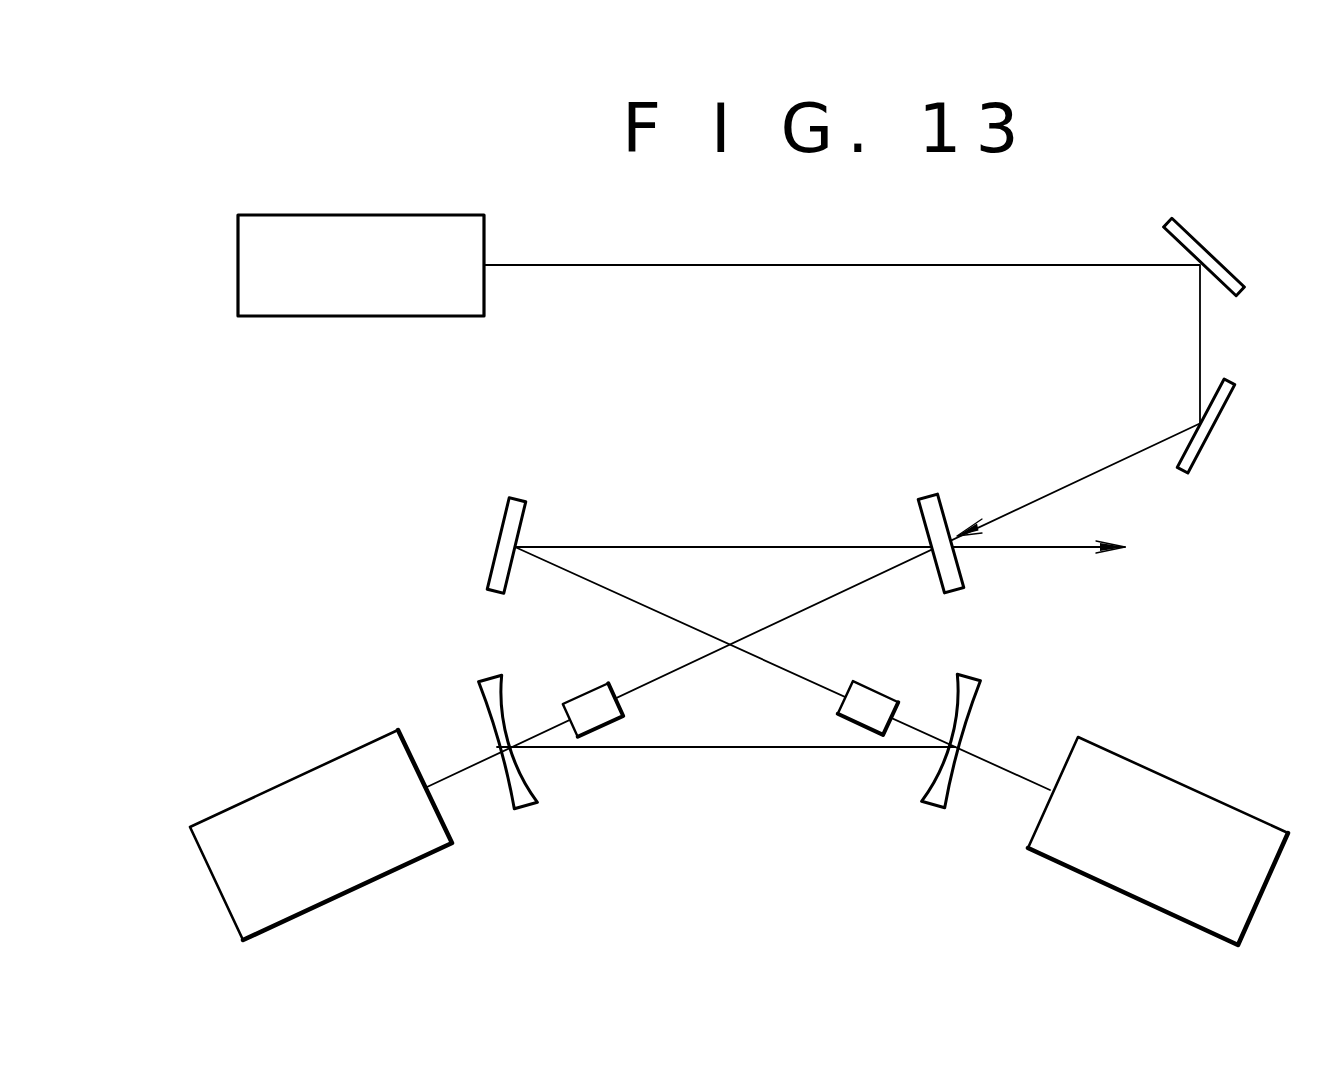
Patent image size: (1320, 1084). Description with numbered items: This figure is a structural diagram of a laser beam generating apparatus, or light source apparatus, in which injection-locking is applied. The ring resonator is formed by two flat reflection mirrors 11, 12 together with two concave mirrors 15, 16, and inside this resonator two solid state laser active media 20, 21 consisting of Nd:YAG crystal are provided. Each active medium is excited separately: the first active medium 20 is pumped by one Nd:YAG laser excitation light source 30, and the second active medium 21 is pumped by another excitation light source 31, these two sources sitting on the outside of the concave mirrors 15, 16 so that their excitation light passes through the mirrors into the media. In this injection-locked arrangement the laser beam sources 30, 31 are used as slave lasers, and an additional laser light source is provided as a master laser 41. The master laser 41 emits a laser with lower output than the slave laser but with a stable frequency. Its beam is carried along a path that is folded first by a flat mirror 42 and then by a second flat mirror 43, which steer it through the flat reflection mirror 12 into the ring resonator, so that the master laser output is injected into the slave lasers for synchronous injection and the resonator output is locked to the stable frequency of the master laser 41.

The flat reflection mirror 11 is at (506, 497).
The flat reflection mirror 12 is at (928, 495).
The concave mirror 15 is at (532, 808).
The concave mirror 16 is at (933, 808).
The solid state laser active medium 20 is at (583, 690).
The solid state laser active medium 21 is at (873, 694).
The laser excitation light source 30 is at (268, 791).
The laser excitation light source 31 is at (1192, 788).
The master laser 41 is at (352, 316).
The flat mirror 42 is at (1212, 243).
The flat mirror 43 is at (1207, 456).